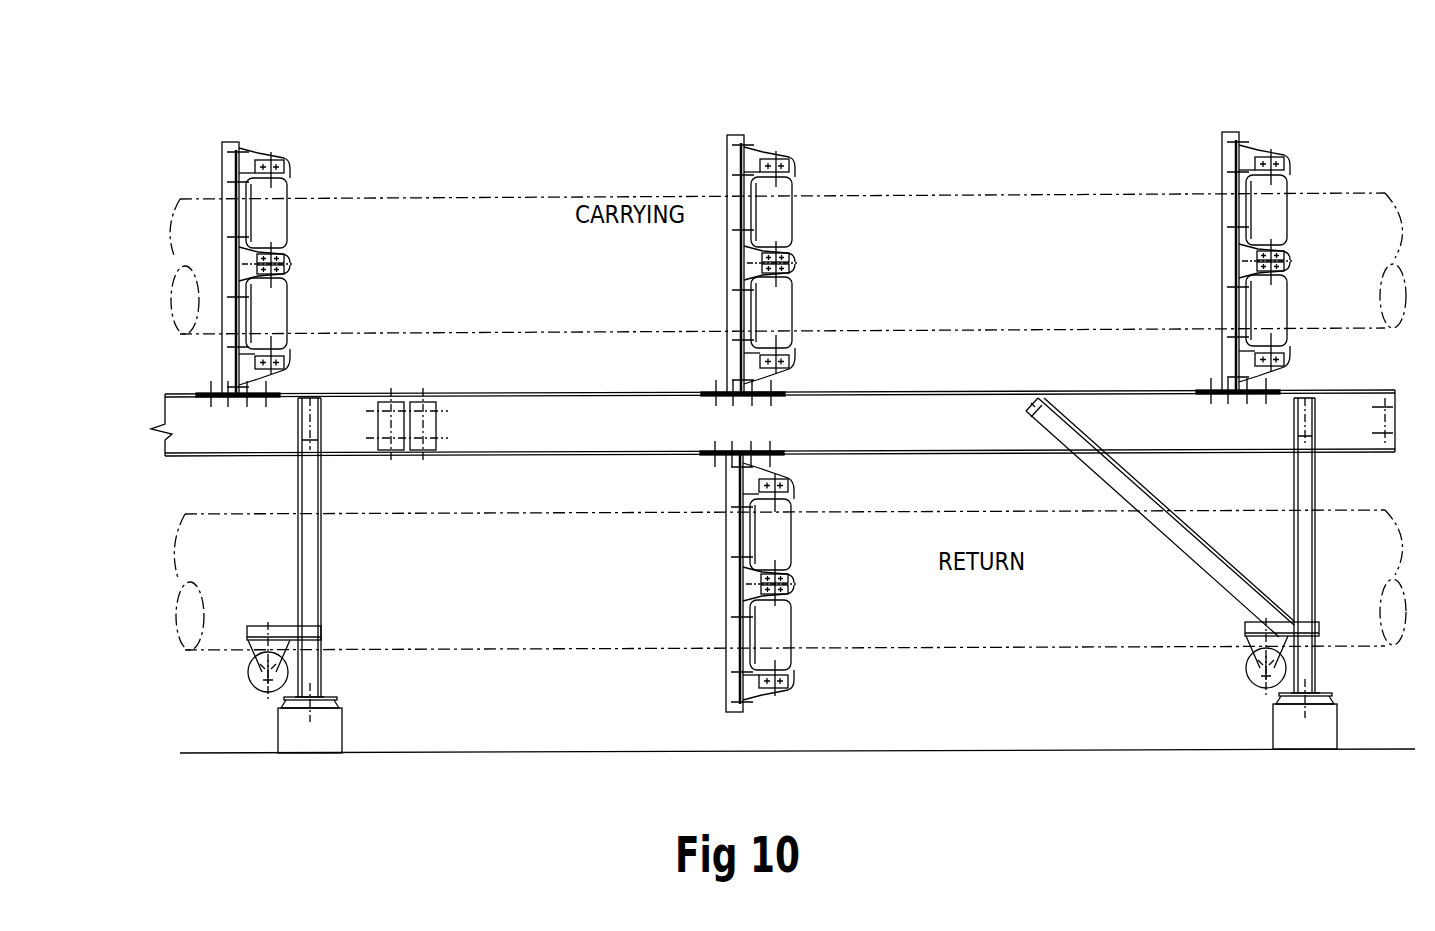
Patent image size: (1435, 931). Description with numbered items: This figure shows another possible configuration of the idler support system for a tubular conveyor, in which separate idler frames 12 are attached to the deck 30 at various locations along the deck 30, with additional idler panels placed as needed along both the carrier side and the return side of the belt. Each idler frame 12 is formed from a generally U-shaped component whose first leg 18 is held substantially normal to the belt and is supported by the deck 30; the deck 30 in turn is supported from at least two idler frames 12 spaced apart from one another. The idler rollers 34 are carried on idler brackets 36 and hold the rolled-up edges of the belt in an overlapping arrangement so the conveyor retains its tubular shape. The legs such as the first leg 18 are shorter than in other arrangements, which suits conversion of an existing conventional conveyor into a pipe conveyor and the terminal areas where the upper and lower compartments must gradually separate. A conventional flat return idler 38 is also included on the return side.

The idler frame 12 is at (225, 140).
The first leg 18 is at (222, 358).
The deck 30 is at (635, 453).
The idler roller 34 is at (290, 223).
The idler bracket 36 is at (250, 152).
The conventional flat return idler 38 is at (257, 692).